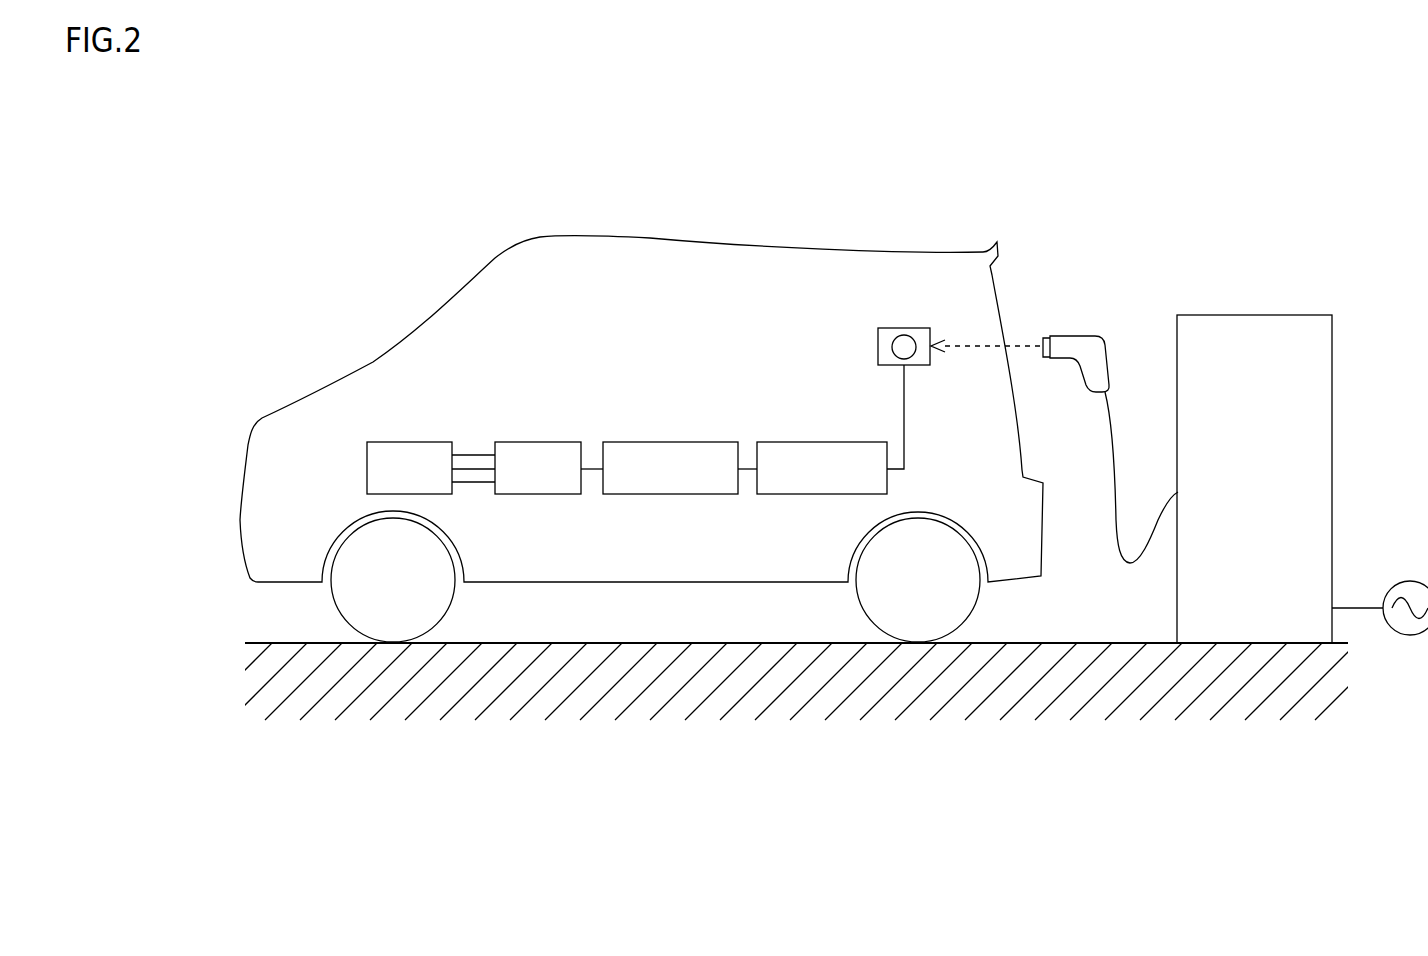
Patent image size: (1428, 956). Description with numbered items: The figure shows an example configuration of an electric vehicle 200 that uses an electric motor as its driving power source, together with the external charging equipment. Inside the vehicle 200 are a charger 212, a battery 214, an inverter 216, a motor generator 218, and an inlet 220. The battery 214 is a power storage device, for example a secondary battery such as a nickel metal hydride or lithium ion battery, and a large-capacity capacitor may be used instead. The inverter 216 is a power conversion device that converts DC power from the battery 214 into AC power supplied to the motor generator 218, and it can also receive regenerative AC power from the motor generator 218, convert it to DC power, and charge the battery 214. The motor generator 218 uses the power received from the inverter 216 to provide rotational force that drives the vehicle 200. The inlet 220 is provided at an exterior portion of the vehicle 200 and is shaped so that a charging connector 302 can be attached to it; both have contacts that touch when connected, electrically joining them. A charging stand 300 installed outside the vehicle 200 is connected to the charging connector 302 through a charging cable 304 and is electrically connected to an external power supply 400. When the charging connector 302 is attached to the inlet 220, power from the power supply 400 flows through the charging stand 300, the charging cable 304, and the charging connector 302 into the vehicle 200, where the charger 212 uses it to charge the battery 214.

The vehicle 200 is at (745, 240).
The charger 212 is at (845, 442).
The battery 214 is at (670, 442).
The inverter 216 is at (537, 442).
The motor generator 218 is at (411, 442).
The inlet 220 is at (437, 530).
The charging stand 300 is at (1293, 313).
The charging connector 302 is at (1074, 333).
The charging cable 304 is at (1137, 566).
The power supply 400 is at (1406, 580).